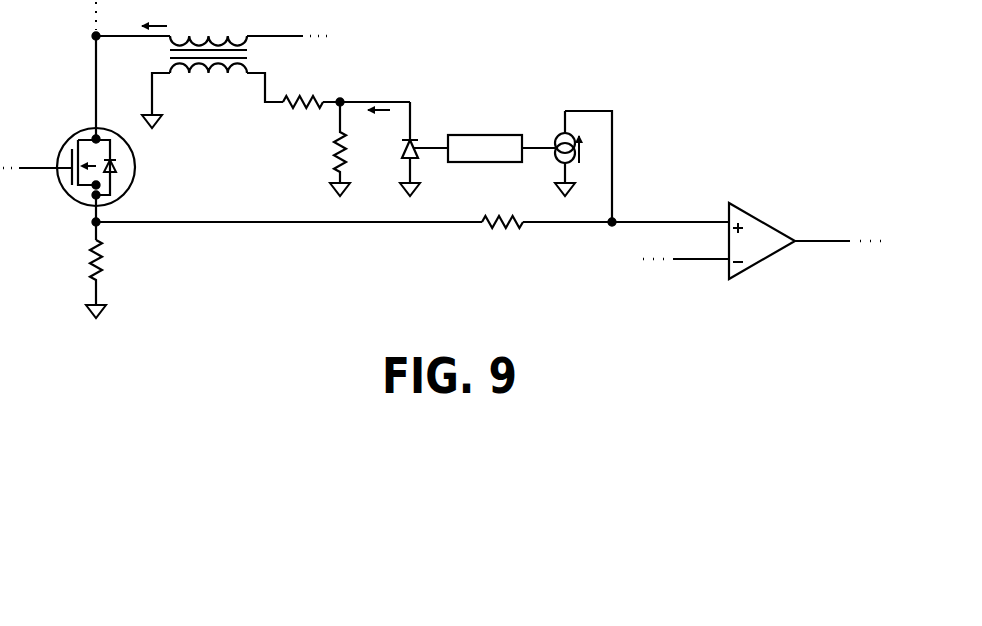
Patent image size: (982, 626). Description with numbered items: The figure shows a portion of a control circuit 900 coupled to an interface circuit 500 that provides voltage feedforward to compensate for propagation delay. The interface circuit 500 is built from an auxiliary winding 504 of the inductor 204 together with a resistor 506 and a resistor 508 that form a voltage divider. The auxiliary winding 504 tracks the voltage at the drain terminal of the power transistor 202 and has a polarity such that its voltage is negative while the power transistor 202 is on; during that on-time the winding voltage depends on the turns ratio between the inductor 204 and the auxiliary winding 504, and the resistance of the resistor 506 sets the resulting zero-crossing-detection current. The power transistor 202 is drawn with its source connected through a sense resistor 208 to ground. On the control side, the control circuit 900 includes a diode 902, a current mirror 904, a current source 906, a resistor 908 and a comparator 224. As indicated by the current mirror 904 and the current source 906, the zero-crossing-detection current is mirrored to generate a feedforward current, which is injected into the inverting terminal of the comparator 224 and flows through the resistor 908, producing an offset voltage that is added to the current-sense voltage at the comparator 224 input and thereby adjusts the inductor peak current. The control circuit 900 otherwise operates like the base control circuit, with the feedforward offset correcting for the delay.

The control circuit 900 is at (684, 126).
The power transistor 202 is at (62, 185).
The inductor 204 is at (212, 36).
The sense resistor Rs 208 is at (89, 258).
The comparator 224 is at (770, 258).
The interface circuit 500 is at (210, 142).
The auxiliary winding 504 is at (224, 73).
The resistor 506 is at (289, 105).
The resistor 508 is at (332, 138).
The diode 902 is at (416, 157).
The current mirror 904 is at (490, 135).
The current source 906 is at (558, 134).
The resistor 908 is at (490, 224).